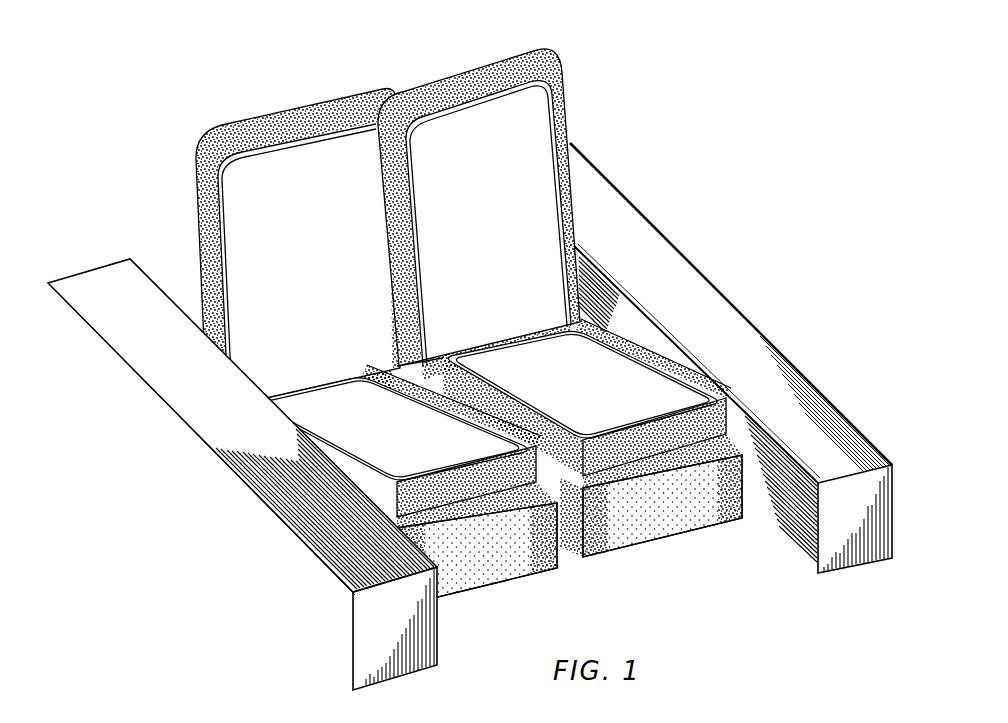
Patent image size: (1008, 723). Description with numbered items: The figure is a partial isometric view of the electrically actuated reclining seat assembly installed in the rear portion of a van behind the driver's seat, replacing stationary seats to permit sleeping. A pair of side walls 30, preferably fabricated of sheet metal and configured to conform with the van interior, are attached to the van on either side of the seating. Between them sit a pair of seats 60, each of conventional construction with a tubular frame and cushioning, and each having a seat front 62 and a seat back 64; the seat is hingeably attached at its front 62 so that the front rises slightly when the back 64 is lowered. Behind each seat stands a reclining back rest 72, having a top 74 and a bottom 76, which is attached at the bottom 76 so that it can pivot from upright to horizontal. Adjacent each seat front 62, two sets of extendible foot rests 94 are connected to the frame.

The side wall 30 is at (130, 262).
The seat 60 is at (352, 440).
The seat front 62 is at (345, 518).
The seat back 64 is at (290, 393).
The reclining back rest 72 is at (250, 220).
The back rest top 74 is at (240, 125).
The back rest bottom 76 is at (290, 373).
The extendible foot rest 94 is at (487, 595).